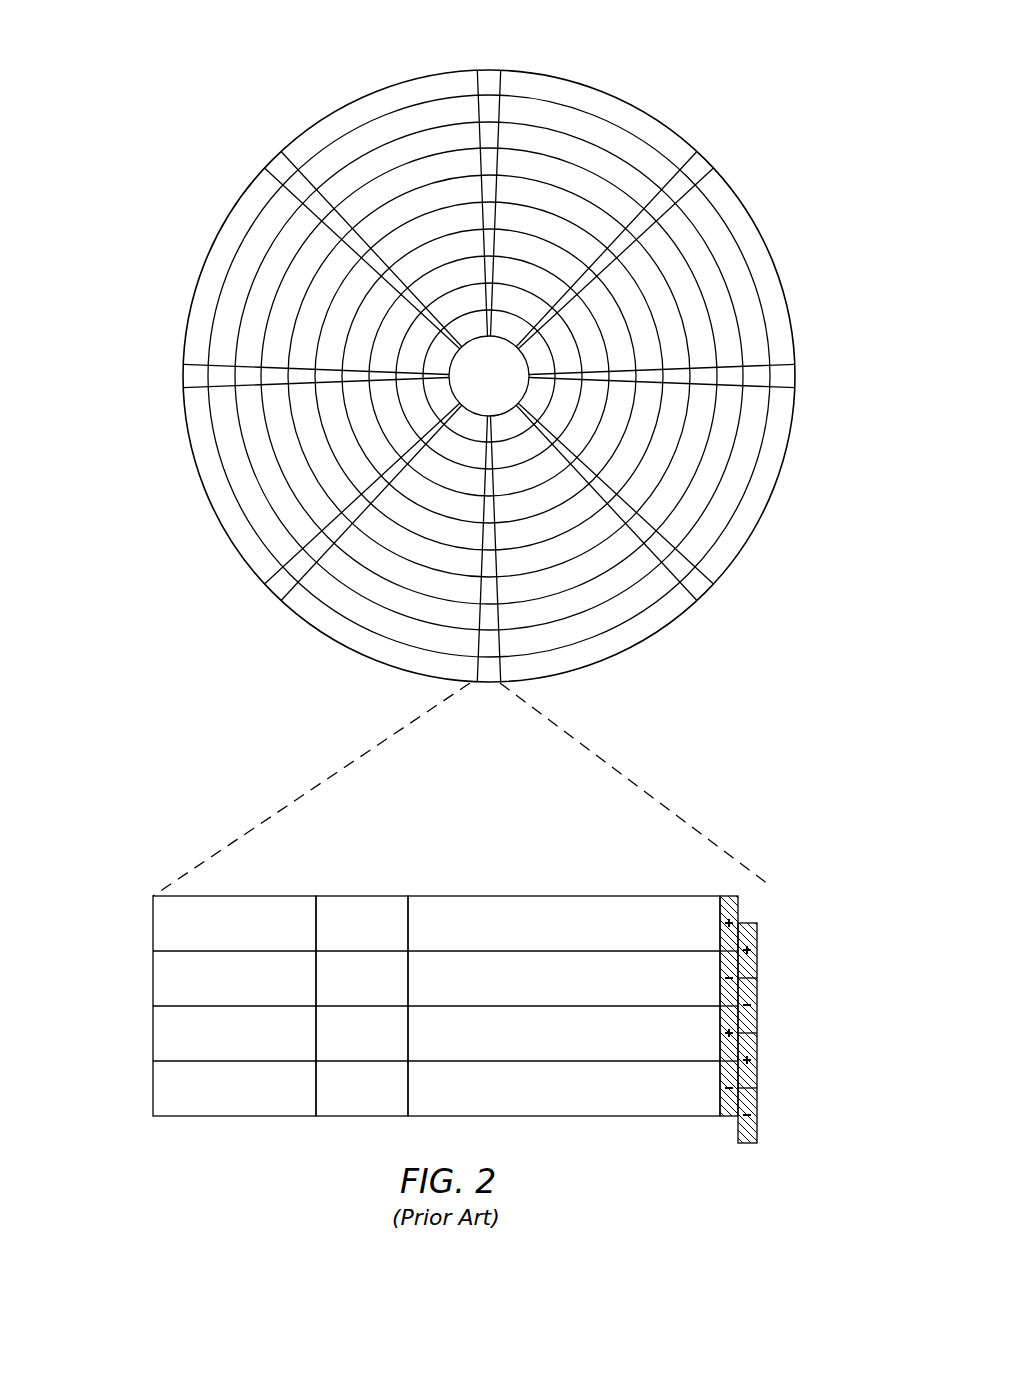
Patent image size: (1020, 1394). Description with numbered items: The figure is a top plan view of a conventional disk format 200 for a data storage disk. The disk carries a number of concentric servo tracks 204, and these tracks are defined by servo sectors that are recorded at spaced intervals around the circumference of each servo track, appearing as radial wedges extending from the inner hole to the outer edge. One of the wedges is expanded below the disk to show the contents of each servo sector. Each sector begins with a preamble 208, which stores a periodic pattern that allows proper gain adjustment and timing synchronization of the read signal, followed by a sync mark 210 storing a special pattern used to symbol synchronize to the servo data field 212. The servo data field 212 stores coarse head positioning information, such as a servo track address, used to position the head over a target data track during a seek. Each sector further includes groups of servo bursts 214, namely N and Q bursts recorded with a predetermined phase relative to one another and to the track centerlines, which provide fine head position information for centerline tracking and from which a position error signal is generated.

The disk format 200 is at (136, 73).
The servo tracks 204 is at (563, 112).
The preamble 208 is at (243, 895).
The sync mark 210 is at (367, 895).
The servo data field 212 is at (565, 895).
The servo bursts 214 is at (763, 893).